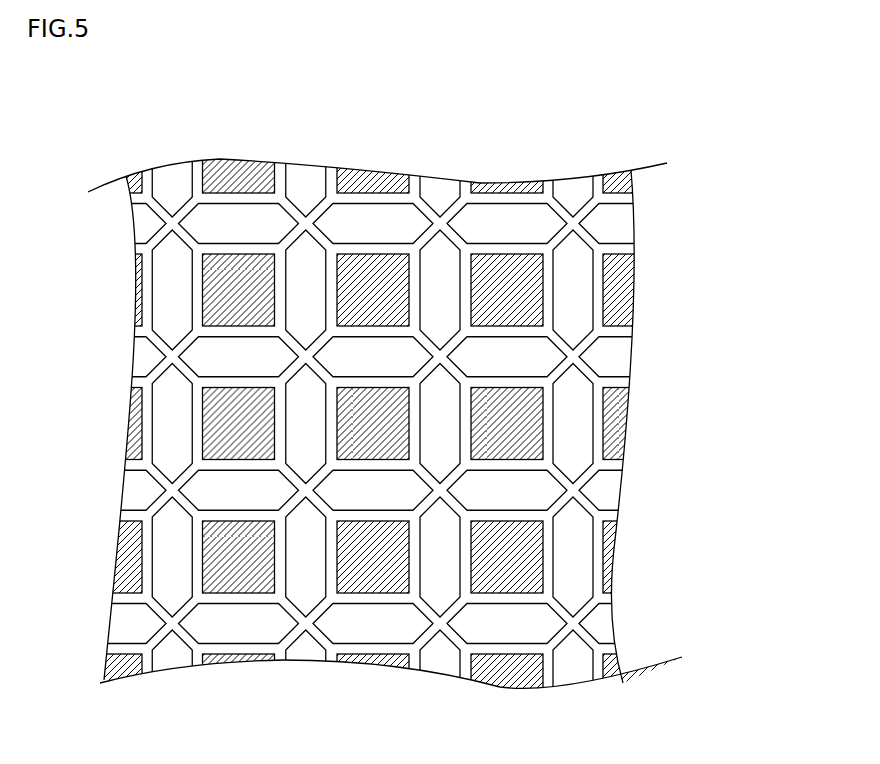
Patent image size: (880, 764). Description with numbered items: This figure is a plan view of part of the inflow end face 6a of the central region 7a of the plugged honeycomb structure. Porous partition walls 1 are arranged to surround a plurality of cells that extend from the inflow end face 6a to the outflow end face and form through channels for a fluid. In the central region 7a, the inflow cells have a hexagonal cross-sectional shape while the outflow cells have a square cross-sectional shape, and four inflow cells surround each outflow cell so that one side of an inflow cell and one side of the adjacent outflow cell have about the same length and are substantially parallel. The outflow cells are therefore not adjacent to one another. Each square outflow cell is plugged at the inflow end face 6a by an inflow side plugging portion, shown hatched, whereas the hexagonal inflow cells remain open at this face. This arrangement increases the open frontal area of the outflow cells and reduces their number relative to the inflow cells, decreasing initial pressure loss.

The partition wall 1 is at (543, 282).
The inflow end face 6a is at (274, 148).
The central region 7a is at (695, 99).